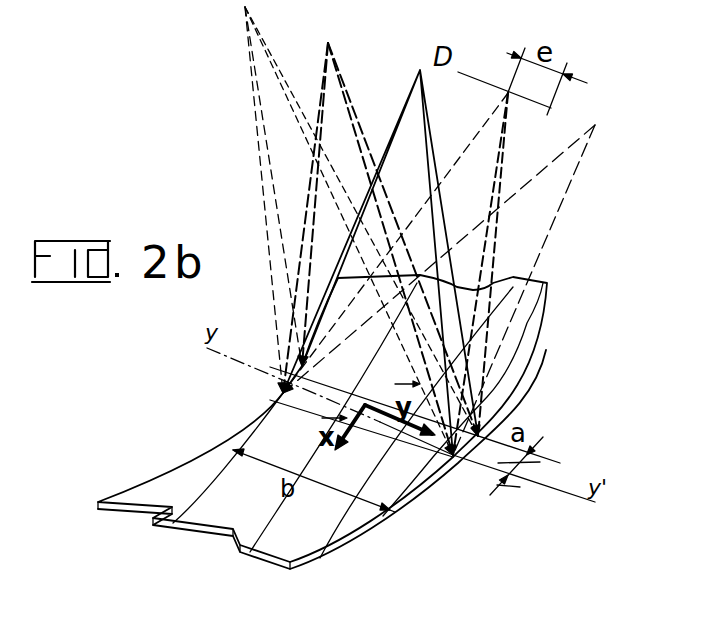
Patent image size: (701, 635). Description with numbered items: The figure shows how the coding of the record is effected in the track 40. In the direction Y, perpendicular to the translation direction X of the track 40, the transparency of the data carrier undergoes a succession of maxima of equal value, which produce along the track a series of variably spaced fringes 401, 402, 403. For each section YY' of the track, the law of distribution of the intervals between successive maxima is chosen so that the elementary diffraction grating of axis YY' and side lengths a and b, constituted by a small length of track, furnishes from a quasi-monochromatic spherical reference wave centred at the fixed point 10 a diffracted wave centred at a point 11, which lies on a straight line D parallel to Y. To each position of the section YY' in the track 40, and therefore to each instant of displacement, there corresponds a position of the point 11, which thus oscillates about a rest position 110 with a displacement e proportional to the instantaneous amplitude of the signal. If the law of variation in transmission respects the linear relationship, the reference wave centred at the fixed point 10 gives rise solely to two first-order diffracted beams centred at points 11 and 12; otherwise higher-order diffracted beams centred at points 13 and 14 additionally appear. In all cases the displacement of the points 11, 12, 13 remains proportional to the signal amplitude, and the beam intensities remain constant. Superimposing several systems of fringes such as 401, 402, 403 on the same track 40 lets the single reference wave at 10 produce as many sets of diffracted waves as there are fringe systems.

The fixed point 10 is at (420, 70).
The point 11 is at (508, 93).
The rest position 110 is at (551, 108).
The point 12 is at (328, 43).
The point 13 is at (245, 7).
The point 14 is at (585, 128).
The track 40 is at (200, 457).
The fringe 401 is at (337, 527).
The fringe 402 is at (270, 537).
The fringe 403 is at (200, 510).